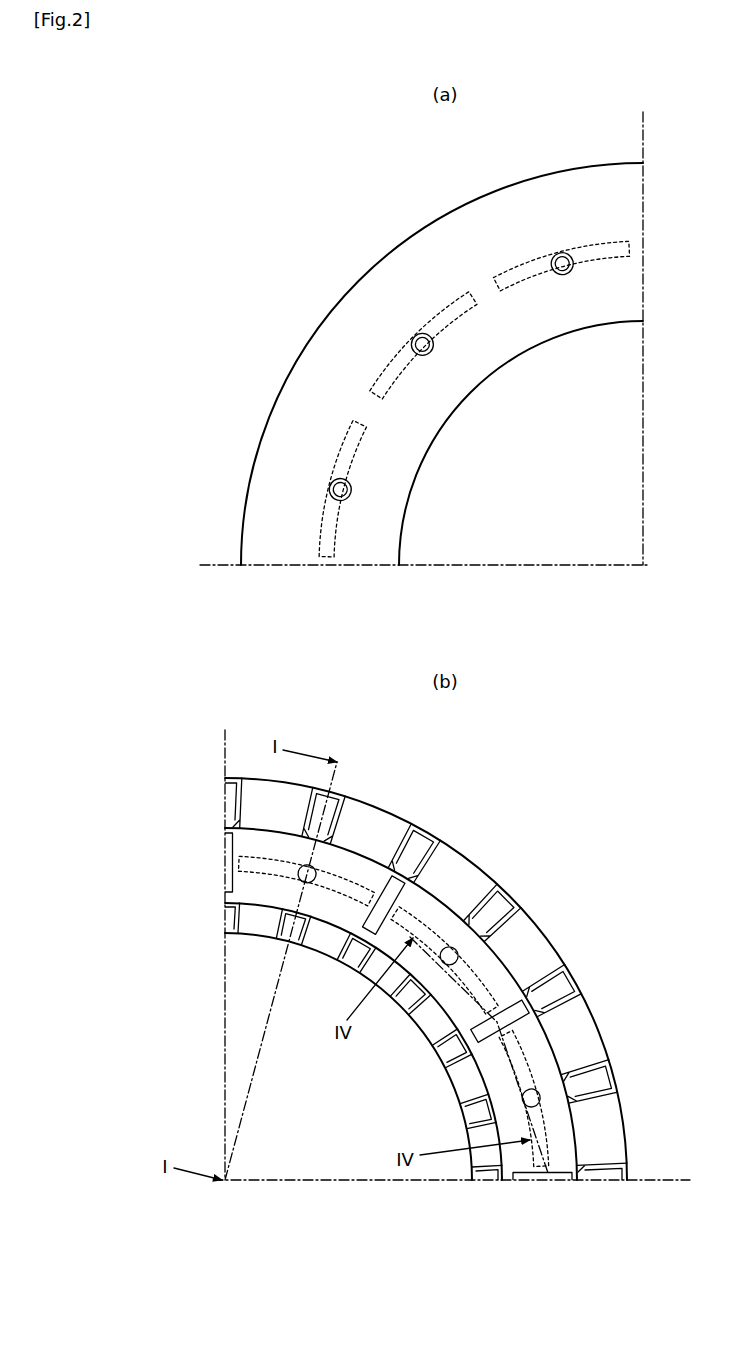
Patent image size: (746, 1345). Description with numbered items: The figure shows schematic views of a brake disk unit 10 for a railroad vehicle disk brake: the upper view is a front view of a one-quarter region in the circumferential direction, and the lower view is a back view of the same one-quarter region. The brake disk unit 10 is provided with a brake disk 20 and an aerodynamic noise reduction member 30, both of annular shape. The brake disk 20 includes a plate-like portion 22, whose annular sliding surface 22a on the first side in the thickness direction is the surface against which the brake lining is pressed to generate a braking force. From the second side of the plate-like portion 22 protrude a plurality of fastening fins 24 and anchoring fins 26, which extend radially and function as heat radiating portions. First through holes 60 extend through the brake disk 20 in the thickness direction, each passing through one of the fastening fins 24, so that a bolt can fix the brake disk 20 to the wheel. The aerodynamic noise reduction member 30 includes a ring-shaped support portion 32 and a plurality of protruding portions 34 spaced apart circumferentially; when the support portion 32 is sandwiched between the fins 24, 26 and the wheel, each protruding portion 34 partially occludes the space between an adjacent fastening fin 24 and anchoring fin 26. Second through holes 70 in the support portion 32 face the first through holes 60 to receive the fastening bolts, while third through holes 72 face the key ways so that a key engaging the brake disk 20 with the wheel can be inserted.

The brake disk unit 10 is at (195, 216).
The brake disk 20 is at (270, 407).
The plate-like portion 22 is at (410, 262).
The sliding surface 22a is at (490, 212).
The fastening fin 24 is at (332, 795).
The anchoring fin 26 is at (240, 800).
The aerodynamic noise reduction member 30 is at (367, 852).
The support portion 32 is at (495, 977).
The protruding portion 34 is at (600, 259).
The first through hole 60 is at (567, 274).
The second through hole 70 is at (302, 883).
The third through hole 72 is at (230, 880).